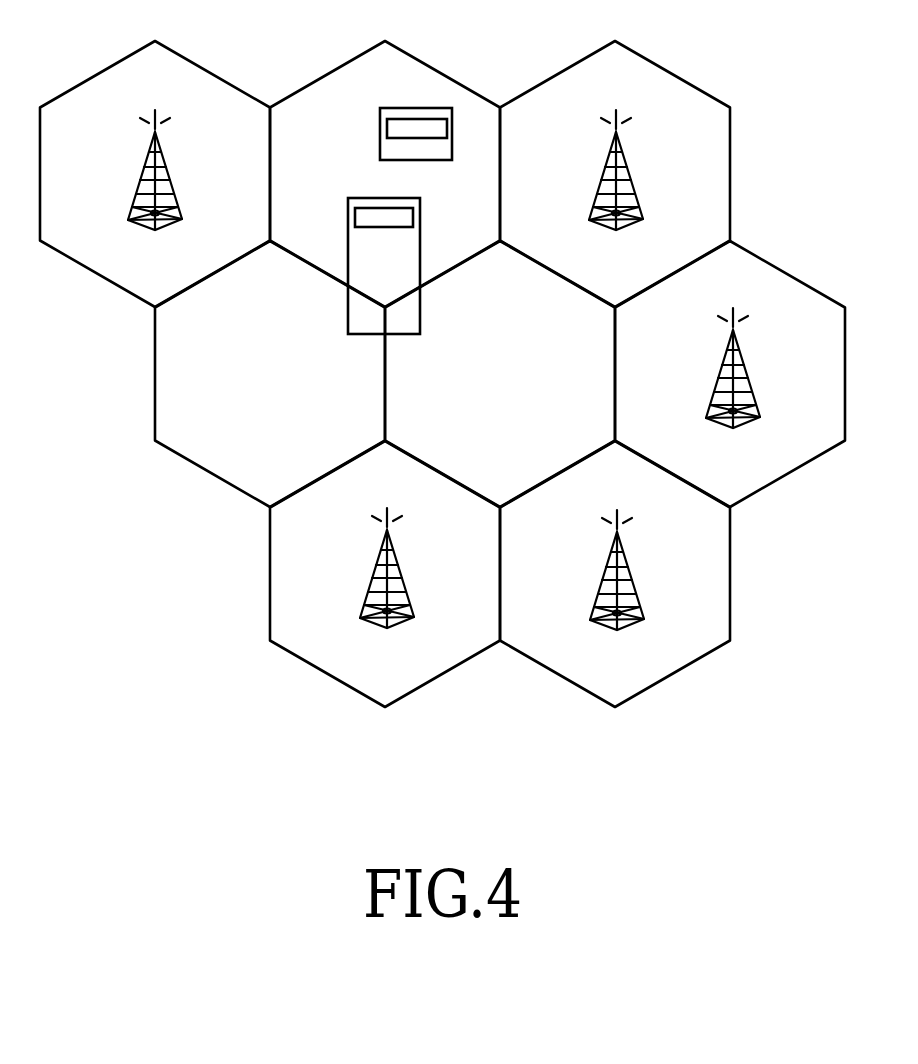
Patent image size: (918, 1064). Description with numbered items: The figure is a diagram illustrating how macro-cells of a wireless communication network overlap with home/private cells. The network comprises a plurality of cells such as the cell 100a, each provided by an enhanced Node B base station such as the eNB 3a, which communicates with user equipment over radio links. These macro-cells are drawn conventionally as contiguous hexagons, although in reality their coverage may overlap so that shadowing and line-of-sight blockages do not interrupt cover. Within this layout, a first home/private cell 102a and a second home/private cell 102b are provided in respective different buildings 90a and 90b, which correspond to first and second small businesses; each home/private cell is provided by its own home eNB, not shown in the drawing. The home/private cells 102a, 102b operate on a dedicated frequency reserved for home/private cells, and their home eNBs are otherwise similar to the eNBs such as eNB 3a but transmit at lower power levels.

The enhanced Node B base station 3a is at (401, 576).
The building 90a is at (420, 306).
The building 90b is at (380, 144).
The cell 100a is at (448, 678).
The home/private cell 102a is at (420, 217).
The home/private cell 102b is at (380, 126).